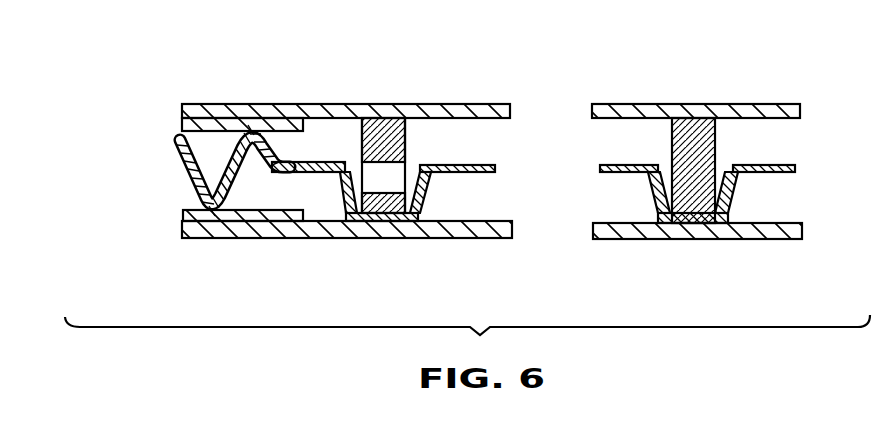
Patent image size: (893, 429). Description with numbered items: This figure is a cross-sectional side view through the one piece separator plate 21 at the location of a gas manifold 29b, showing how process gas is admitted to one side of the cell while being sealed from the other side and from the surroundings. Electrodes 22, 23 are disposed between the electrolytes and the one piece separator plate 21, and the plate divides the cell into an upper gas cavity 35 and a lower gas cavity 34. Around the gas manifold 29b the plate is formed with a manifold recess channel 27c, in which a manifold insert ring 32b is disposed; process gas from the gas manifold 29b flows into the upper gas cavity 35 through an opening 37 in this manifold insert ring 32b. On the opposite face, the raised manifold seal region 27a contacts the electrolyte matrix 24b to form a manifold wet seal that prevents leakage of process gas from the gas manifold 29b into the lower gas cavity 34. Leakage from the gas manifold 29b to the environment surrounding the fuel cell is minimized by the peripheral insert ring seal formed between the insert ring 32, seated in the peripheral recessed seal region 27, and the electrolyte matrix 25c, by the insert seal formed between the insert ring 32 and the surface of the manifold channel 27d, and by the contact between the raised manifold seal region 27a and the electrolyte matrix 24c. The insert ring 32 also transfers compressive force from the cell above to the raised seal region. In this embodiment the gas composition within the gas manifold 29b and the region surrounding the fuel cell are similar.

The one piece separator plate 21 is at (180, 165).
The electrode 22 is at (183, 122).
The electrode 23 is at (183, 218).
The electrolyte matrix 24b is at (257, 240).
The electrolyte matrix 24c is at (698, 239).
The electrolyte matrix 25c is at (688, 104).
The peripheral recessed seal region 27 is at (368, 215).
The raised manifold seal region 27a is at (400, 212).
The manifold recess channel 27c is at (412, 173).
The manifold channel 27d is at (723, 172).
The gas manifold 29b is at (545, 117).
The insert ring 32 is at (720, 195).
The manifold insert ring 32b is at (383, 105).
The lower gas cavity 34 is at (303, 204).
The upper gas cavity 35 is at (341, 150).
The opening 37 is at (392, 190).